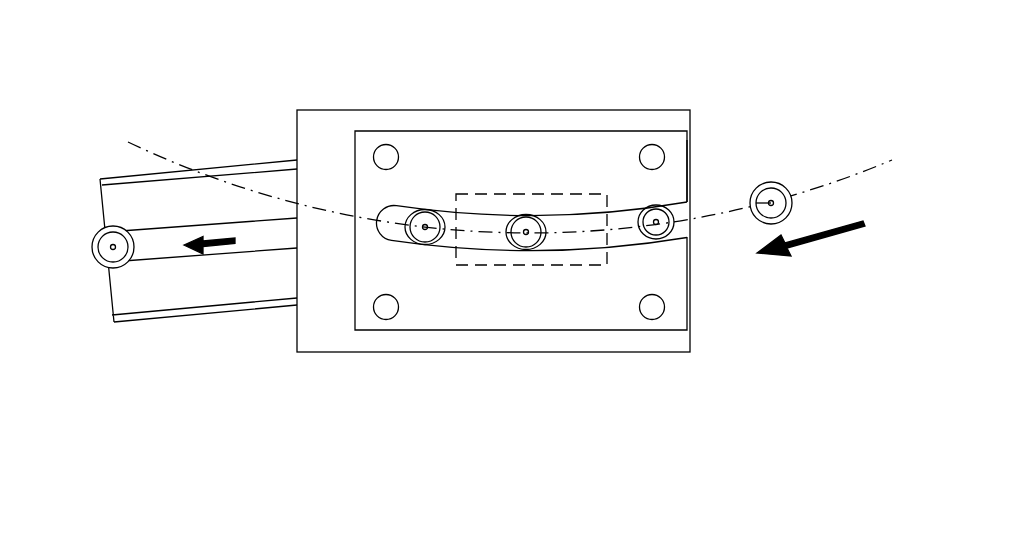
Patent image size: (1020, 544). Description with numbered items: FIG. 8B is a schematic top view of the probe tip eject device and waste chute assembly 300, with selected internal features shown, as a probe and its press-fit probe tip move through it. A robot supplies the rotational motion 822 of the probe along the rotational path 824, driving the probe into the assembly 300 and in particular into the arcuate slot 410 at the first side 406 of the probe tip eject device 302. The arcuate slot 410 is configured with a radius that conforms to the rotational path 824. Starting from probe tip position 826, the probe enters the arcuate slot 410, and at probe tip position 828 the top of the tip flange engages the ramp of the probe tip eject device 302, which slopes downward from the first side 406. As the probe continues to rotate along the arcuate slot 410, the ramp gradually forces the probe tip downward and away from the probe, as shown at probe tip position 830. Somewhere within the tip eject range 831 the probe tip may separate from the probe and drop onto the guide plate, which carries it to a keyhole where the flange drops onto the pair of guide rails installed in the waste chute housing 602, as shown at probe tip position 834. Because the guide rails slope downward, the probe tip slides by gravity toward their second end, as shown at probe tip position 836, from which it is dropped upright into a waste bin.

The assembly 300 is at (271, 79).
The probe tip eject device 302 is at (602, 130).
The first side 406 is at (690, 173).
The arcuate slot 410 is at (630, 210).
The waste chute housing 602 is at (356, 110).
The rotational motion 822 is at (817, 239).
The rotational path 824 is at (850, 172).
The probe tip position 826 is at (774, 181).
The probe tip position 828 is at (639, 243).
The probe tip position 830 is at (525, 249).
The tip eject range 831 is at (522, 193).
The probe tip position 834 is at (422, 243).
The probe tip position 836 is at (92, 256).